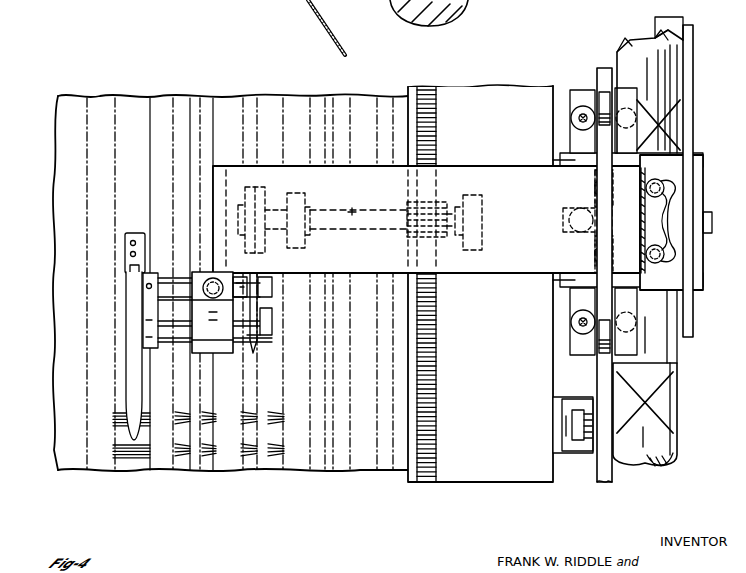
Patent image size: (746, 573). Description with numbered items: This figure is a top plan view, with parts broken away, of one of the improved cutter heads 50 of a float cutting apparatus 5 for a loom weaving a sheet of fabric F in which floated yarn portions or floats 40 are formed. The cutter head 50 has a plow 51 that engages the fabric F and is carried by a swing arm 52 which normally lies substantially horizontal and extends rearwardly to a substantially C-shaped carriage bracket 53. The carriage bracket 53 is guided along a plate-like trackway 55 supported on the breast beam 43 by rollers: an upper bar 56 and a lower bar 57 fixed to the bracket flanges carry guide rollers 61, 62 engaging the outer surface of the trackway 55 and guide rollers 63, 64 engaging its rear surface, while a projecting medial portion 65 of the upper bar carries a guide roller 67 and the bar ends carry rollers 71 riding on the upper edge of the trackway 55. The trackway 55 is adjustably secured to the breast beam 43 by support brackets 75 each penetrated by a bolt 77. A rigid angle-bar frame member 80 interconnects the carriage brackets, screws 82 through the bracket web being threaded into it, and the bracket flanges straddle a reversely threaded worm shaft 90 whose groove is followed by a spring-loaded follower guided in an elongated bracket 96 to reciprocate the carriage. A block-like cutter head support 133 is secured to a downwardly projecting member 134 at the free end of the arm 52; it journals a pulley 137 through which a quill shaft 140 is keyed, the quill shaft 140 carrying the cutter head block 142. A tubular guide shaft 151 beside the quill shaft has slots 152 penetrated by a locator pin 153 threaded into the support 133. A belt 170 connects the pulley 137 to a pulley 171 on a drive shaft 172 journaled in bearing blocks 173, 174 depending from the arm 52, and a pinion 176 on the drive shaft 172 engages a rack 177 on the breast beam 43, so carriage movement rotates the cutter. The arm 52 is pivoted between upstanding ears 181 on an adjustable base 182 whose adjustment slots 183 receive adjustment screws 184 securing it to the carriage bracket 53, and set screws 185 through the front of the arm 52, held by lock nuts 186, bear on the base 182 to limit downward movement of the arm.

The machine 5 is at (712, 245).
The floats 40 is at (118, 440).
The breast beam 43 is at (489, 371).
The cutter head 50 is at (126, 313).
The plow 51 is at (126, 383).
The swing arm 52 is at (324, 172).
The carriage bracket 53 is at (700, 188).
The trackway 55 is at (596, 483).
The bar 56 is at (626, 90).
The bar 57 is at (582, 356).
The guide roller 61 is at (632, 108).
The guide roller 62 is at (626, 356).
The guide roller 63 is at (571, 118).
The guide roller 64 is at (571, 322).
The medial portion 65 is at (562, 230).
The guide roller 67 is at (566, 217).
The rollers 71 is at (603, 352).
The support bracket 75 is at (556, 424).
The bolt 77 is at (572, 430).
The frame member 80 is at (693, 318).
The screw 82 is at (712, 217).
The worm shaft 90 is at (670, 405).
The bracket 96 is at (672, 20).
The cutter head support 133 is at (214, 353).
The downwardly projecting member 134 is at (222, 184).
The pulley 137 is at (254, 352).
The quill shaft 140 is at (270, 323).
The cutter head block 142 is at (130, 347).
The tubular guide shaft 151 is at (272, 285).
The slots 152 is at (180, 288).
The locator pin 153 is at (214, 280).
The belt 170 is at (256, 298).
The pulley 171 is at (250, 190).
The drive shaft 172 is at (355, 213).
The bearing block 173 is at (296, 192).
The bearing block 174 is at (494, 178).
The pinion 176 is at (412, 204).
The rack 177 is at (434, 298).
The ears 181 is at (562, 281).
The adjustable base 182 is at (676, 275).
The adjustment slots 183 is at (672, 192).
The adjustment screw 184 is at (656, 198).
The set screw 185 is at (597, 252).
The lock nut 186 is at (600, 255).
The fabric F is at (220, 98).